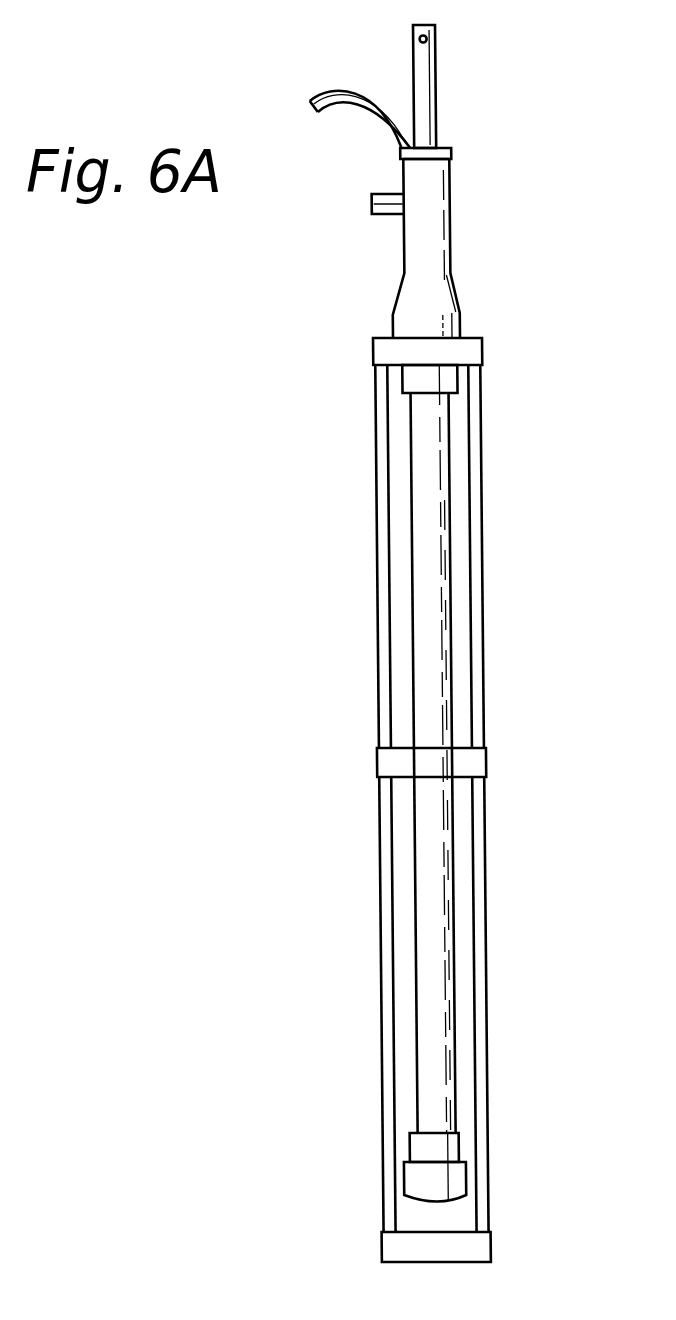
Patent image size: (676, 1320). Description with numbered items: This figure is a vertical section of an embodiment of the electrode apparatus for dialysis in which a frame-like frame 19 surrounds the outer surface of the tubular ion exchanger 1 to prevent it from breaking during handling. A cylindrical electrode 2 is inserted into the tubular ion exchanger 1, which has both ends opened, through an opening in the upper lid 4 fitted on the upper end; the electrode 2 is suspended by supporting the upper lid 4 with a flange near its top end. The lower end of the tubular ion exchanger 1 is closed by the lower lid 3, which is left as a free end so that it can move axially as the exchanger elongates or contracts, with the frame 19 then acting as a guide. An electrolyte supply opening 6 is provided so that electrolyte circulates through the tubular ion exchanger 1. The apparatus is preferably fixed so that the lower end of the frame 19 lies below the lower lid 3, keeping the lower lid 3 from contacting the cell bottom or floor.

The tubular ion exchanger 1 is at (447, 715).
The cylindrical electrode 2 is at (439, 103).
The lower lid 3 is at (458, 1172).
The upper lid 4 is at (451, 257).
The electrolyte supply opening 6 is at (323, 98).
The frame 19 is at (480, 577).